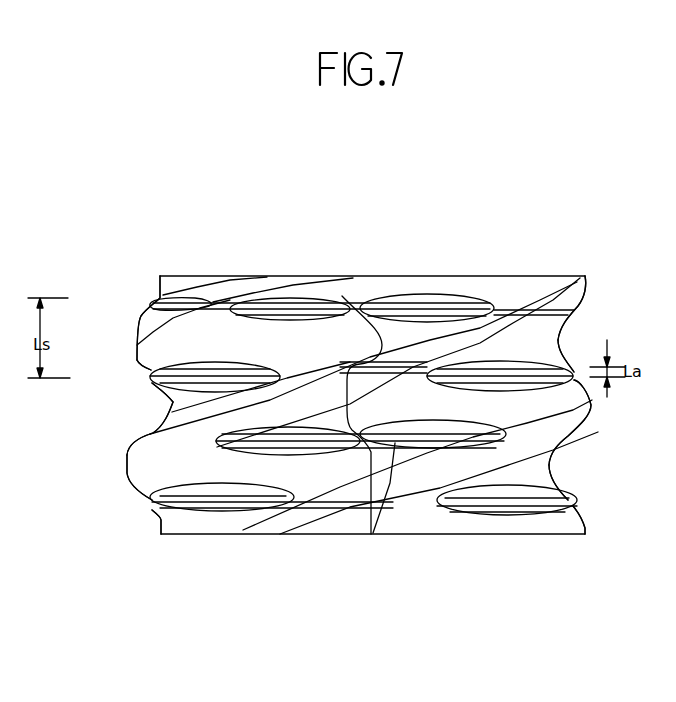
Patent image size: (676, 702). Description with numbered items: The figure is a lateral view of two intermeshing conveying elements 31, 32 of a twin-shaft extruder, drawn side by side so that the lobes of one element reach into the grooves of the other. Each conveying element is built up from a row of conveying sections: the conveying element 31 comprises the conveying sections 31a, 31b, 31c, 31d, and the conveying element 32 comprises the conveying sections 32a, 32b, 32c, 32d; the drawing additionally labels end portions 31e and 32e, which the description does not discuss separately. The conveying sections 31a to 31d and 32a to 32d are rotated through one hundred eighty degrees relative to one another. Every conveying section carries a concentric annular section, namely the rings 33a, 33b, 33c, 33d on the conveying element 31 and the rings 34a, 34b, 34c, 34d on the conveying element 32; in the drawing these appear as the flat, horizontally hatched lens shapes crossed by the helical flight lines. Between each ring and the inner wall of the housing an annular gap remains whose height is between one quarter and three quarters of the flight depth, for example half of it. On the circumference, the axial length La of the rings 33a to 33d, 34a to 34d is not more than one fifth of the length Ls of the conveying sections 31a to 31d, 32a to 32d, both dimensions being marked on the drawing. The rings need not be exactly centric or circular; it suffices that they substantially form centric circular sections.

The conveying element 31 is at (252, 541).
The conveying element 32 is at (414, 537).
The conveying section 31a is at (153, 303).
The conveying section 31b is at (150, 368).
The conveying section 31c is at (165, 410).
The conveying section 31d is at (131, 490).
The fifth lobe of first roller 31e is at (158, 520).
The conveying section 32a is at (583, 292).
The conveying section 32b is at (560, 340).
The conveying section 32c is at (582, 402).
The conveying section 32d is at (550, 467).
The fifth lobe of second roller 32e is at (583, 517).
The annular section 33a is at (293, 298).
The annular section 33b is at (153, 375).
The annular section 33c is at (350, 381).
The annular section 33d is at (203, 500).
The annular section 34a is at (418, 297).
The annular section 34b is at (513, 370).
The annular section 34c is at (371, 536).
The annular section 34d is at (507, 516).